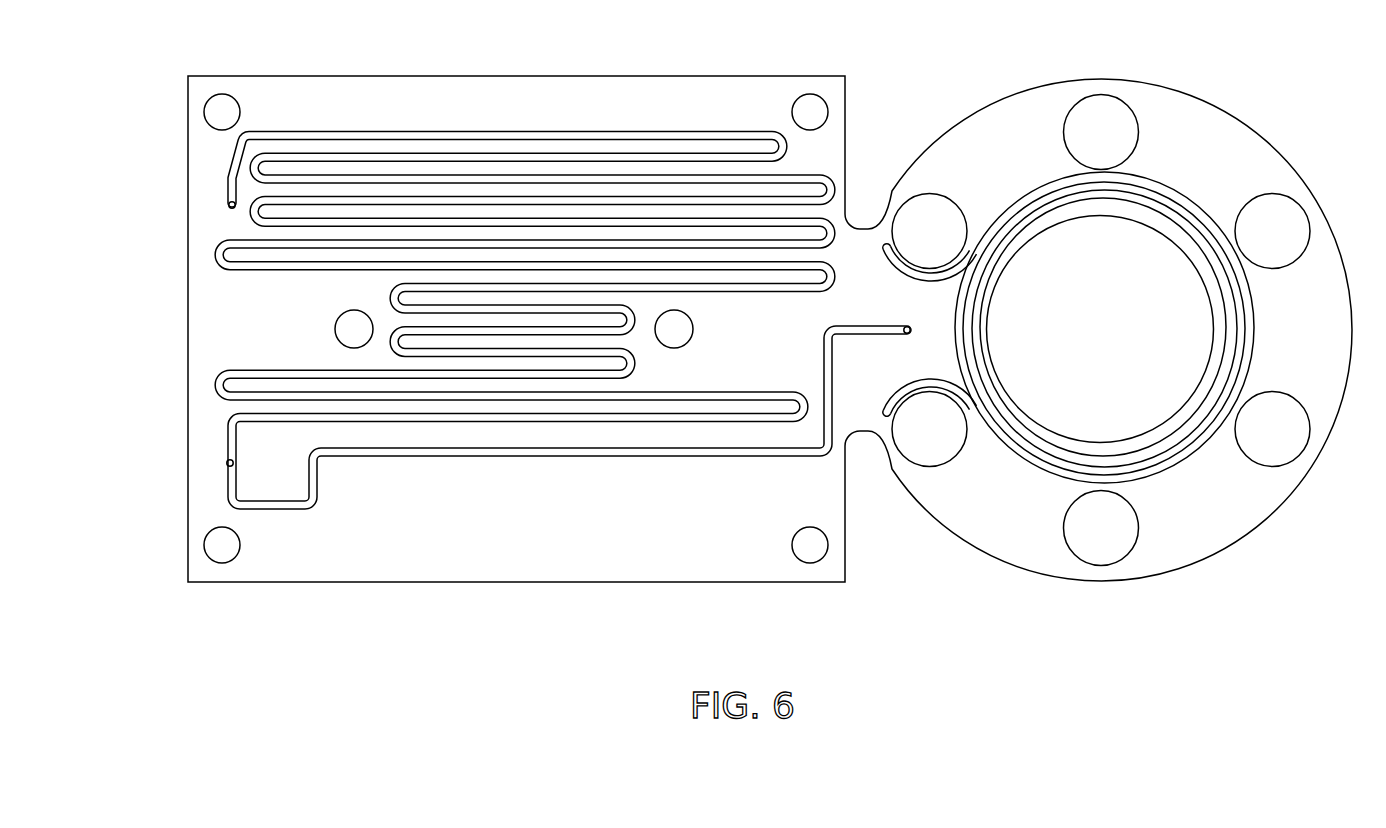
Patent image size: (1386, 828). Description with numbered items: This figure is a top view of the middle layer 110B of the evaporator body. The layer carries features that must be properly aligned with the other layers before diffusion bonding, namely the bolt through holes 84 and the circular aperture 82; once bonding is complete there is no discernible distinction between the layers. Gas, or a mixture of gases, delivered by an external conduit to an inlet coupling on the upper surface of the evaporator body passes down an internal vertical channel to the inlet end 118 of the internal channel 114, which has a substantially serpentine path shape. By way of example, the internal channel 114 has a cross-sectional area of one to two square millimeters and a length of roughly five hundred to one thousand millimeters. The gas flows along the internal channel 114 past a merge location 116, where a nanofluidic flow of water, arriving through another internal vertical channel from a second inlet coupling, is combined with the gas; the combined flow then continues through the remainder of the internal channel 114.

The middle layer 110B is at (712, 75).
The internal channel 114 is at (258, 271).
The merge location 116 is at (226, 463).
The inlet end 118 is at (226, 206).
The circular aperture 82 is at (1160, 246).
The bolt through holes 84 is at (1099, 106).